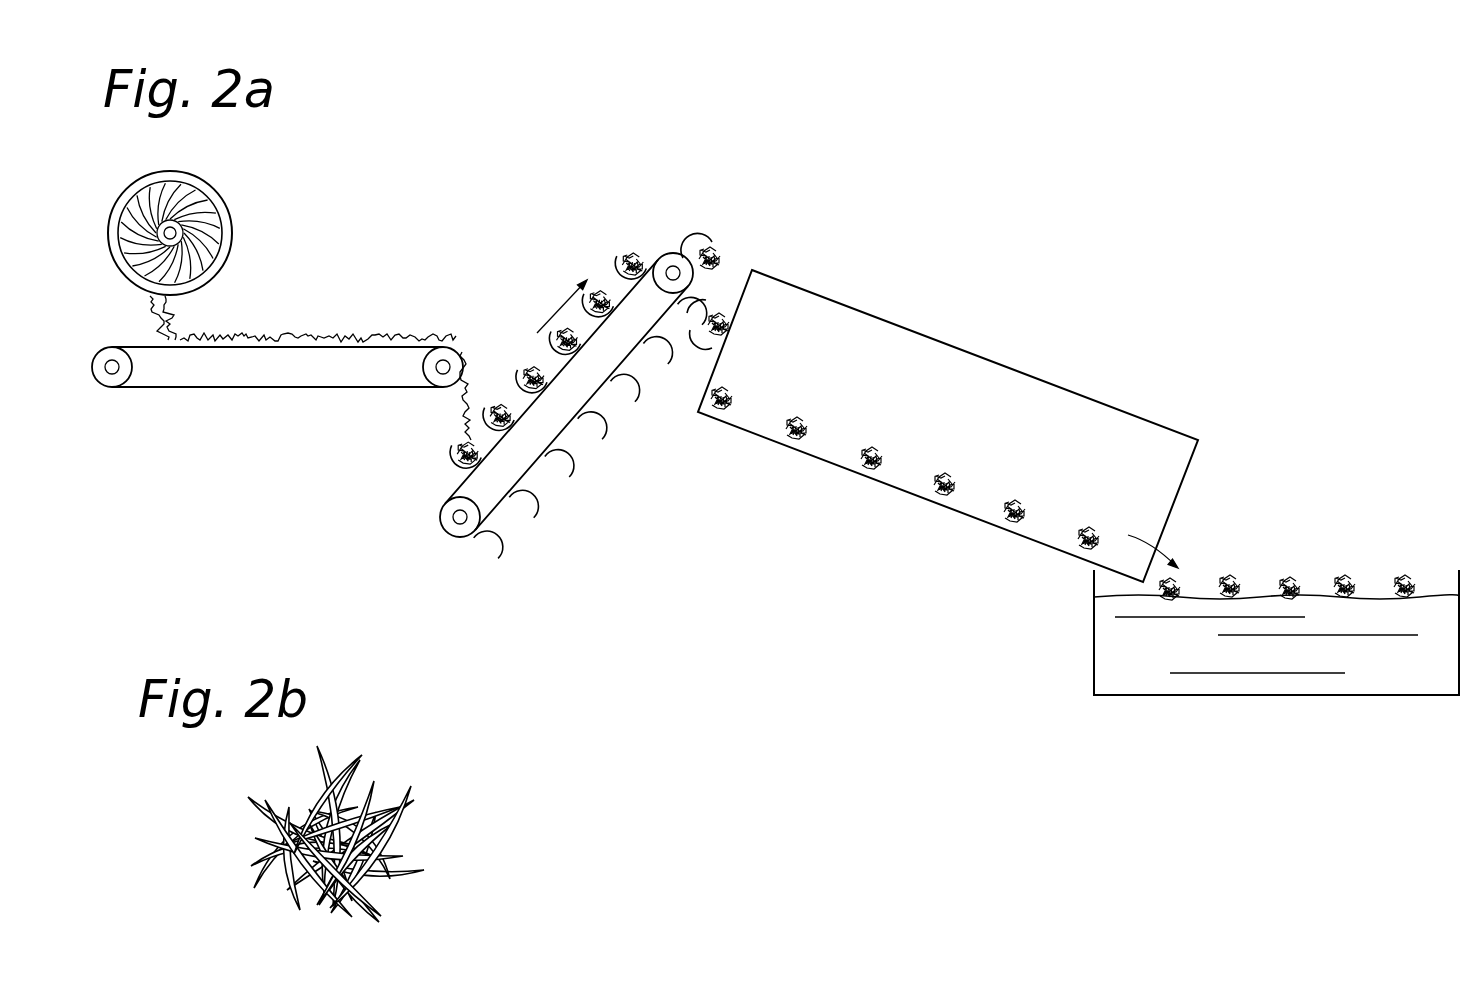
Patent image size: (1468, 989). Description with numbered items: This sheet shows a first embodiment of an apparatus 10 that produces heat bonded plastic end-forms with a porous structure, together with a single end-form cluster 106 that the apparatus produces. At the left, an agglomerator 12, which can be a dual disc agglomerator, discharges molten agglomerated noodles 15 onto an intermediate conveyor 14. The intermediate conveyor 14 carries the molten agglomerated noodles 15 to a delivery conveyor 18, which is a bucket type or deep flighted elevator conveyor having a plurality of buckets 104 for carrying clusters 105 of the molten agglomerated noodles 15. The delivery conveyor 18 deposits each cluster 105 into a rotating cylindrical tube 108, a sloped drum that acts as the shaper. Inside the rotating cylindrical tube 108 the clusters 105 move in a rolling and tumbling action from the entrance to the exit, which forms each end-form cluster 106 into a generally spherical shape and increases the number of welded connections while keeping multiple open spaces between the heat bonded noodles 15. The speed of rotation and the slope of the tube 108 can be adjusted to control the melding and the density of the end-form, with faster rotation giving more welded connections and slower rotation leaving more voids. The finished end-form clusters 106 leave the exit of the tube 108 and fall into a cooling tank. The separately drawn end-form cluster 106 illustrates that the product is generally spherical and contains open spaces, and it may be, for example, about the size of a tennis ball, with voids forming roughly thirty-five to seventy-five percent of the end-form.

In FIG. 2A, the apparatus 10 is at (713, 170).
In FIG. 2A, the agglomerator 12 is at (240, 200).
In FIG. 2A, the intermediate conveyor 14 is at (380, 330).
In FIG. 2A, the molten agglomerated noodles 15 is at (262, 335).
In FIG. 2A, the delivery conveyor 18 is at (655, 456).
In FIG. 2A, the buckets 104 is at (527, 370).
In FIG. 2A, the clusters 105 is at (637, 252).
In FIG. 2A, the end-form cluster 106 is at (1290, 583).
In FIG. 2B, the end-form cluster 106 is at (455, 815).
In FIG. 2A, the rotating cylindrical tube 108 is at (877, 327).